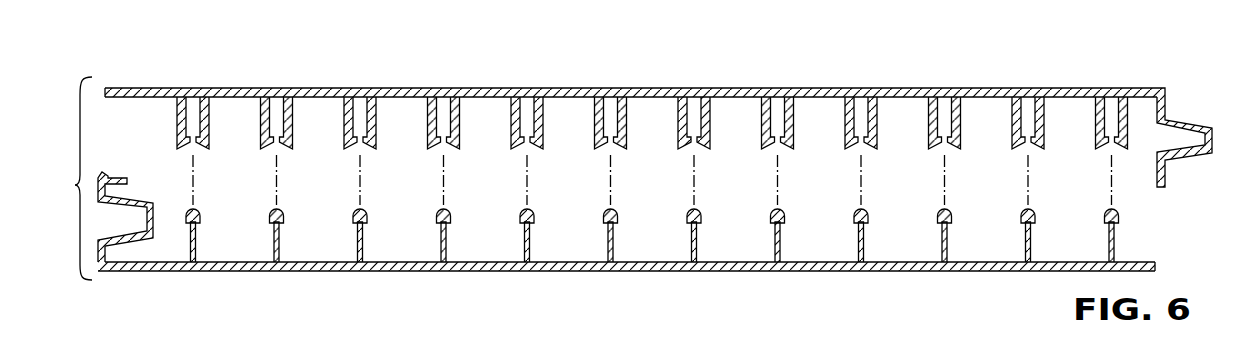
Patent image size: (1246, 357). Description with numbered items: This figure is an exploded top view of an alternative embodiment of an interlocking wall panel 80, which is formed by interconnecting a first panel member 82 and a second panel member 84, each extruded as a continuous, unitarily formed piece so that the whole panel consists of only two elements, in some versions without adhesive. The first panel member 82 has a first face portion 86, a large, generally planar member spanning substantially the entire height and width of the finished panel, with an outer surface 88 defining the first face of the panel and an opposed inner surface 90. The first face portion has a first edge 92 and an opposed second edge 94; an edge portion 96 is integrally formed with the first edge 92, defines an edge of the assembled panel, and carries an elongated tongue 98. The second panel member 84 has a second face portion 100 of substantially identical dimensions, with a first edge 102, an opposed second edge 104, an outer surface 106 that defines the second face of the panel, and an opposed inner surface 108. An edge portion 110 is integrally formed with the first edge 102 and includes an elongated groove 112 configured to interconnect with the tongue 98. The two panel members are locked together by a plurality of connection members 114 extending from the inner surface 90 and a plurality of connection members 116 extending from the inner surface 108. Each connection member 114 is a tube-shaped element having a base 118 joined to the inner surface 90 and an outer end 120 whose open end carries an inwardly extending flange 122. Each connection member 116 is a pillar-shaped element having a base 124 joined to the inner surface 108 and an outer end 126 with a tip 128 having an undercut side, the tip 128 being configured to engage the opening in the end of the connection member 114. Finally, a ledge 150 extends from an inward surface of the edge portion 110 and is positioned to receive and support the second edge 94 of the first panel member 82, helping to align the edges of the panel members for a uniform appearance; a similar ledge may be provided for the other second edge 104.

The wall panel 80 is at (1005, 85).
The first panel member 82 is at (741, 86).
The second panel member 84 is at (716, 276).
The first face portion 86 is at (842, 88).
The outer surface 88 is at (947, 87).
The inner surface 90 is at (903, 99).
The first edge 92 is at (1163, 86).
The second edge 94 is at (101, 87).
The edge portion 96 is at (1192, 118).
The elongated tongue 98 is at (1191, 157).
The second face portion 100 is at (832, 273).
The first edge 102 is at (102, 266).
The second edge 104 is at (1156, 266).
The outer surface 106 is at (912, 274).
The inner surface 108 is at (890, 259).
The edge portion 110 is at (90, 185).
The elongated groove 112 is at (105, 222).
The connection members 114 is at (707, 128).
The connection members 116 is at (782, 232).
The base 118 is at (716, 103).
The outer end 120 is at (683, 143).
The inwardly extending flange 122 is at (698, 148).
The base 124 is at (700, 244).
The outer end 126 is at (783, 216).
The tip 128 is at (772, 214).
The ledge 150 is at (121, 178).